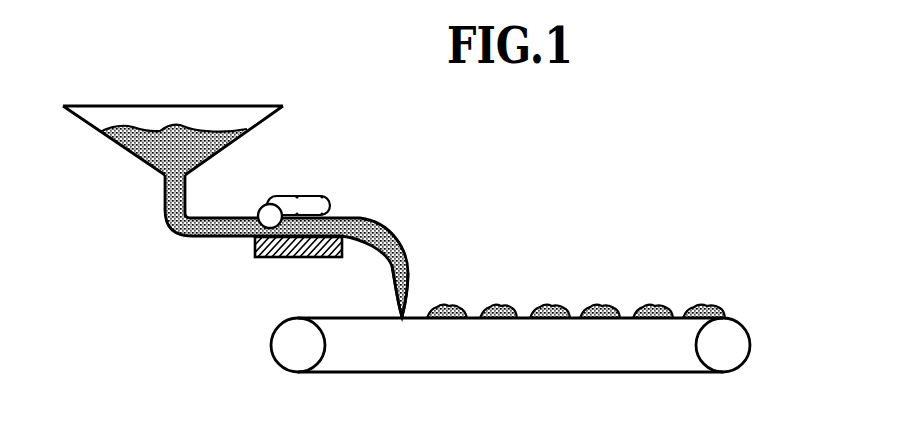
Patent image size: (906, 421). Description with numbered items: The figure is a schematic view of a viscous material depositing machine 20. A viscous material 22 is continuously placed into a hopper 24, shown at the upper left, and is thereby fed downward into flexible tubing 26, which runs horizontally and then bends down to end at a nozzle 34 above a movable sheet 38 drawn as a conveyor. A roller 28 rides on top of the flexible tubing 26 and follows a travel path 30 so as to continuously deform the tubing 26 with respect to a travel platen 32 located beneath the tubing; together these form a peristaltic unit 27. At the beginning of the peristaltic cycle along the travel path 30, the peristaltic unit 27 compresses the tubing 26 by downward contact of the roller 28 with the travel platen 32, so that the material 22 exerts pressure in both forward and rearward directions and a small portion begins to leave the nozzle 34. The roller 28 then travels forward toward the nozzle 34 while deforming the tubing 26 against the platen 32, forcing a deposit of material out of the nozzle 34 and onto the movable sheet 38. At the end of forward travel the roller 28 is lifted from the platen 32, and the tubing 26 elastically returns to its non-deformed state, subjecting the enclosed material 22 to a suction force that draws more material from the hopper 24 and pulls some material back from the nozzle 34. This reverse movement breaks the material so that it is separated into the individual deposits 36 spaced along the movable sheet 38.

The viscous material depositing machine 20 is at (552, 198).
The viscous material 22 is at (157, 122).
The hopper 24 is at (237, 105).
The flexible tubing 26 is at (213, 217).
The peristaltic unit 27 is at (376, 195).
The roller 28 is at (277, 210).
The travel path 30 is at (325, 210).
The travel platen 32 is at (254, 257).
The nozzle 34 is at (400, 312).
The individual deposits 36 is at (508, 306).
The movable sheet 38 is at (328, 318).